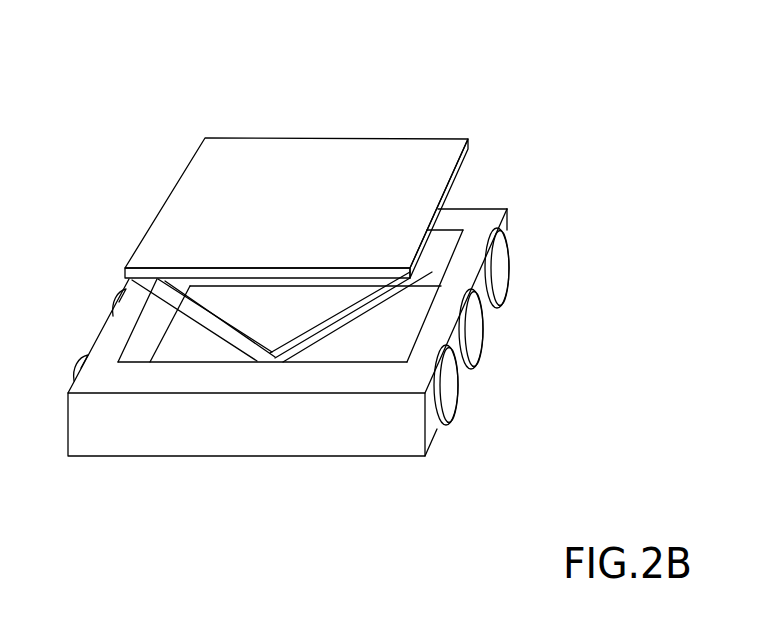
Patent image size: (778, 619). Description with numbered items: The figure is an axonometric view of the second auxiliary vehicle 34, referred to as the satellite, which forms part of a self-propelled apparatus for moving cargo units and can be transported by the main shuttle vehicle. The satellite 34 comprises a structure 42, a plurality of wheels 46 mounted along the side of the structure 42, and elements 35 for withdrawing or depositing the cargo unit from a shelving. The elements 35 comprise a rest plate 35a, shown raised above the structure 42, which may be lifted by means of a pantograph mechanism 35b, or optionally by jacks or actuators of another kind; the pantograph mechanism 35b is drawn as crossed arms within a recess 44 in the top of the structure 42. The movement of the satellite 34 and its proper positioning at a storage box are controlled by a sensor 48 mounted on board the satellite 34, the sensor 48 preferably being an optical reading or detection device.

The second auxiliary vehicle 34 is at (140, 176).
The elements for withdrawing or depositing the cargo unit 35 is at (330, 124).
The rest plate 35a is at (410, 165).
The pantograph mechanism 35b is at (213, 327).
The structure 42 is at (320, 422).
The recess in base housing 44 is at (418, 300).
The wheels 46 is at (502, 275).
The sensor 48 is at (435, 430).